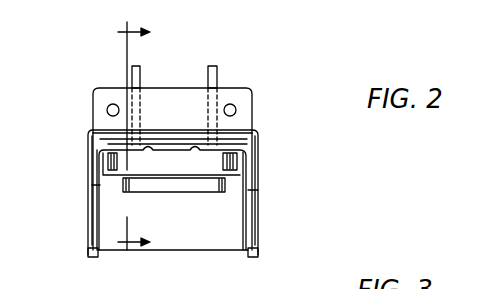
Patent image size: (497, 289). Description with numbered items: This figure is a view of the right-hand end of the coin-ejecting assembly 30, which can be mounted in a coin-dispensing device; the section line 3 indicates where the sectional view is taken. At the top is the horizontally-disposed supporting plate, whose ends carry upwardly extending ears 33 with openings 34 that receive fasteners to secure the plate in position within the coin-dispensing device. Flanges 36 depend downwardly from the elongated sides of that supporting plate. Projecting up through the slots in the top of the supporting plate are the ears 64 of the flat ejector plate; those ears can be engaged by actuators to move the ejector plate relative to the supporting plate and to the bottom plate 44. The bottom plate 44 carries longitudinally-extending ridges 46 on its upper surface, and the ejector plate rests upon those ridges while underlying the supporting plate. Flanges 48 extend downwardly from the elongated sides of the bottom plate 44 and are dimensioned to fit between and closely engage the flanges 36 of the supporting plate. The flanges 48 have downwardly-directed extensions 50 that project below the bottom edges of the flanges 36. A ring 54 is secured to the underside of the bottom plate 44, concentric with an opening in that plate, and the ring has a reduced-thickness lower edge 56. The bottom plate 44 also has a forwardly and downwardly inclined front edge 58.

The section line 3- 3 is at (131, 127).
The coin-ejecting assembly 30 is at (297, 152).
The ears 33 is at (250, 92).
The openings 34 is at (110, 104).
The flanges 36 is at (90, 222).
The bottom plate 44 is at (230, 158).
The ridges 46 is at (150, 151).
The flanges 48 is at (96, 185).
The extensions 50 is at (96, 256).
The ring 54 is at (98, 165).
The reduced-thickness lower edge 56 is at (196, 150).
The front edge 58 is at (160, 250).
The ears 64 is at (213, 65).